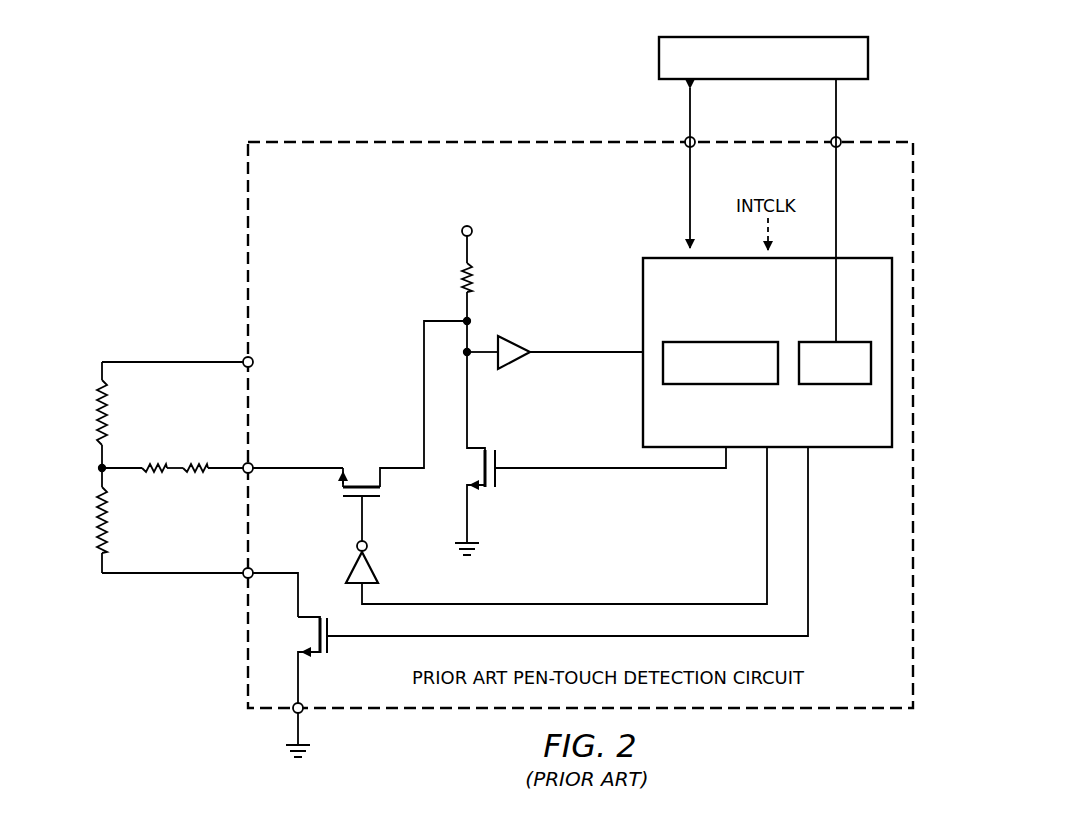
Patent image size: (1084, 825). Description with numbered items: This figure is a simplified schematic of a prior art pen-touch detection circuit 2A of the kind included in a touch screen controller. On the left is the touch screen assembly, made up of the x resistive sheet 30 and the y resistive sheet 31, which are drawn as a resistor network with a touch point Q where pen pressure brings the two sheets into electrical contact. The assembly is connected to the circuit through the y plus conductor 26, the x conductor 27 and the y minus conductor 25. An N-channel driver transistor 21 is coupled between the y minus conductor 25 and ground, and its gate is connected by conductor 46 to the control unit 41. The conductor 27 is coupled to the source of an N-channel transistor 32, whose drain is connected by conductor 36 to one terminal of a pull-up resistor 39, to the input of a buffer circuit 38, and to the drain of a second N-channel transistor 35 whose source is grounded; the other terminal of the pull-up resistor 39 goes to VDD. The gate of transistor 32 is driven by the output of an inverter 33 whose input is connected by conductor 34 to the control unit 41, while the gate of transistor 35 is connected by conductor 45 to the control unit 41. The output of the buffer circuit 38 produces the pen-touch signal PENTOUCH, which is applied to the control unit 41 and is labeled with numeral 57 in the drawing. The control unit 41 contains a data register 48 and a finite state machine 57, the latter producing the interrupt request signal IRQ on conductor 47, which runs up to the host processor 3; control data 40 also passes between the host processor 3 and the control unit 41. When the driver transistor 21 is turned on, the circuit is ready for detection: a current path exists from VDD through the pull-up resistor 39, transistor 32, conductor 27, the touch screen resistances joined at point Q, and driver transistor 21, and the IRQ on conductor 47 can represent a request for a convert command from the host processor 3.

The pen-touch detection circuit 2A is at (244, 220).
The host processor 3 is at (870, 56).
The N-channel driver transistor 21 is at (330, 643).
The y− conductor 25 is at (287, 573).
The y+ line 26 is at (165, 362).
The x+ conductor 27 is at (290, 468).
The x resistive sheet 30 is at (158, 403).
The y resistive sheet 31 is at (122, 290).
The N-channel transistor 32 is at (352, 499).
The inverter 33 is at (372, 563).
The conductor 34 is at (567, 604).
The N-channel transistor 35 is at (497, 478).
The conductor 36 is at (446, 321).
The buffer circuit 38 is at (517, 364).
The pull-up resistor 39 is at (474, 282).
The control data bus 40 is at (688, 155).
The control unit 41 is at (828, 450).
The conductor 45 is at (622, 470).
The conductor 46 is at (808, 555).
The conductor 47 is at (837, 115).
The data register 48 is at (727, 385).
The finite state machine 57 is at (845, 385).